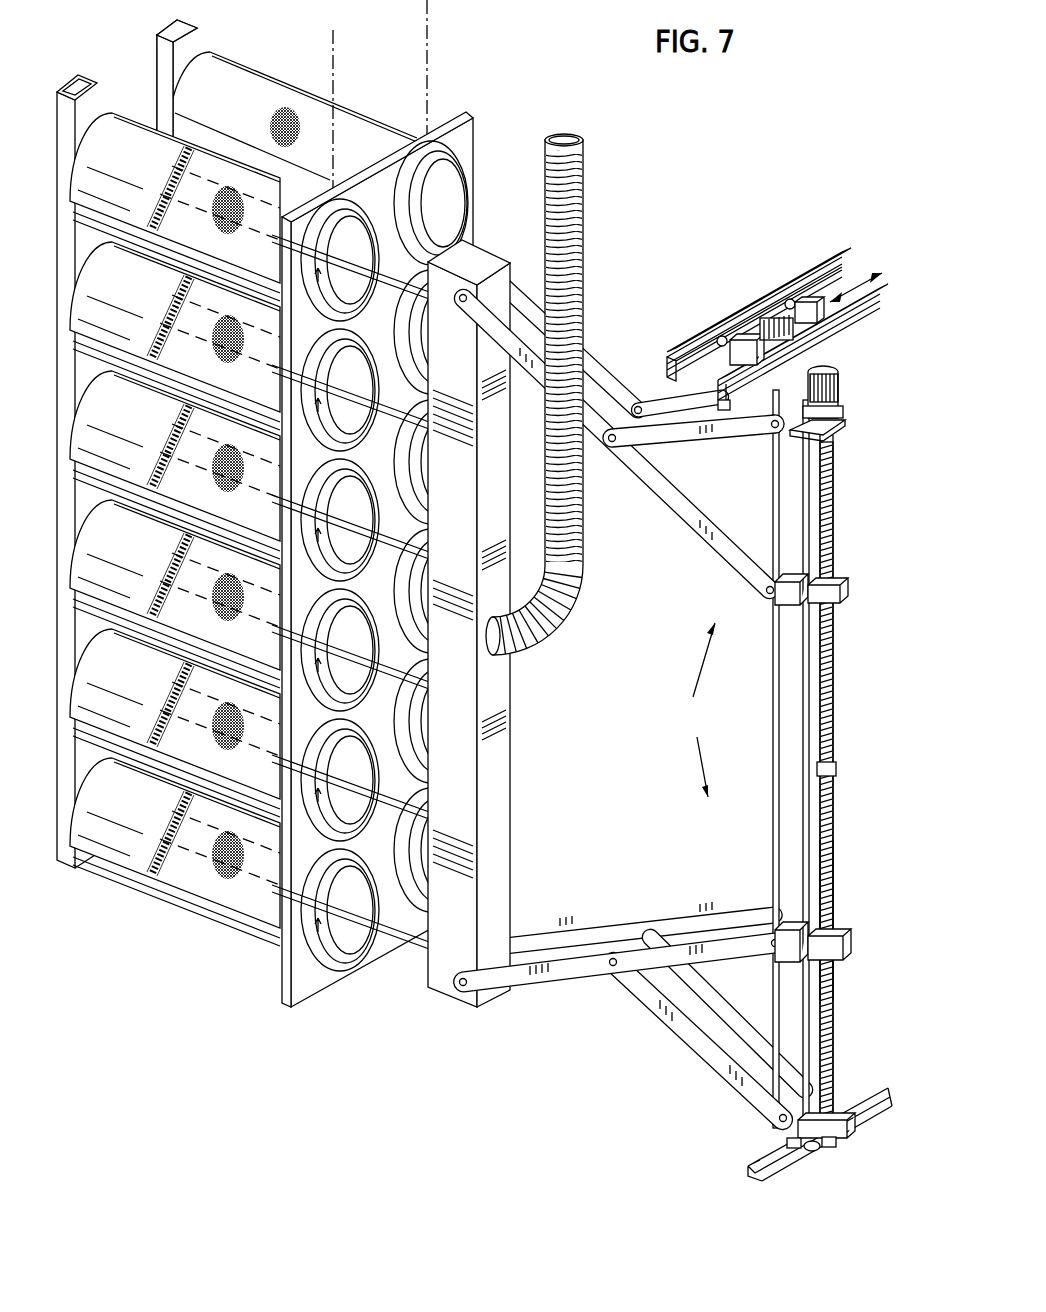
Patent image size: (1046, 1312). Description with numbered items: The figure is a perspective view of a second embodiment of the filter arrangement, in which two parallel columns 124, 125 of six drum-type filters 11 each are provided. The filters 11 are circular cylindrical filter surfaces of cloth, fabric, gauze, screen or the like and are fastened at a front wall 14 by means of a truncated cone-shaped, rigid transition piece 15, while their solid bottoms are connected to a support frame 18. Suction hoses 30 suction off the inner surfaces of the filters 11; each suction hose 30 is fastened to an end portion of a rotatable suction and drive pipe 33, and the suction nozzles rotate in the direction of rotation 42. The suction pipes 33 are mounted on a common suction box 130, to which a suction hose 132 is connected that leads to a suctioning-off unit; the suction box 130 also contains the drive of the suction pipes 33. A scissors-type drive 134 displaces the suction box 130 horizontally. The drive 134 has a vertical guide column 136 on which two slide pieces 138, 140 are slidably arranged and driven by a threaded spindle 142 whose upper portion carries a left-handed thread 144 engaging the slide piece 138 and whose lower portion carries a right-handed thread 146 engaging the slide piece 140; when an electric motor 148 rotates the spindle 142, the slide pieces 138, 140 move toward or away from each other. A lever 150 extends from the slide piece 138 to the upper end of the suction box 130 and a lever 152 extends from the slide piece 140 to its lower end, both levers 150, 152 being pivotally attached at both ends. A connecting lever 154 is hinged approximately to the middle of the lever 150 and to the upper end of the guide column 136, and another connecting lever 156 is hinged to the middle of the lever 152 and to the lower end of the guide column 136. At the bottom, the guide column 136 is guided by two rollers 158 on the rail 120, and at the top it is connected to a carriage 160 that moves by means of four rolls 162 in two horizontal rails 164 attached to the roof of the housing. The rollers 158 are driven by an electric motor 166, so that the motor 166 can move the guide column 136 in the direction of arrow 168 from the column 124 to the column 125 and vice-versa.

The drum-type filter 11 is at (221, 103).
The front wall 14 is at (360, 560).
The transition piece 15 is at (323, 322).
The support frame 18 is at (158, 65).
The suction hose 30 is at (175, 173).
The suction and drive pipe 33 is at (357, 288).
The direction of rotation 42 is at (300, 214).
The rail 120 is at (750, 1178).
The column 124 is at (333, 52).
The column 125 is at (427, 22).
The suction box 130 is at (500, 795).
The suction hose 132 is at (580, 625).
The scissors-type drive 134 is at (694, 710).
The guide column 136 is at (777, 768).
The slide piece 138 is at (780, 600).
The slide piece 140 is at (772, 925).
The threaded spindle 142 is at (836, 769).
The left-handed thread 144 is at (834, 652).
The right-handed thread 146 is at (836, 852).
The electric motor 148 is at (840, 410).
The lever 150 is at (690, 512).
The lever 152 is at (620, 929).
The connecting lever 154 is at (725, 430).
The connecting lever 156 is at (690, 1042).
The roller 158 is at (772, 1145).
The carriage 160 is at (756, 300).
The roll 162 is at (720, 331).
The horizontal rail 164 is at (680, 330).
The electric motor 166 is at (778, 316).
The arrow 168 is at (856, 265).